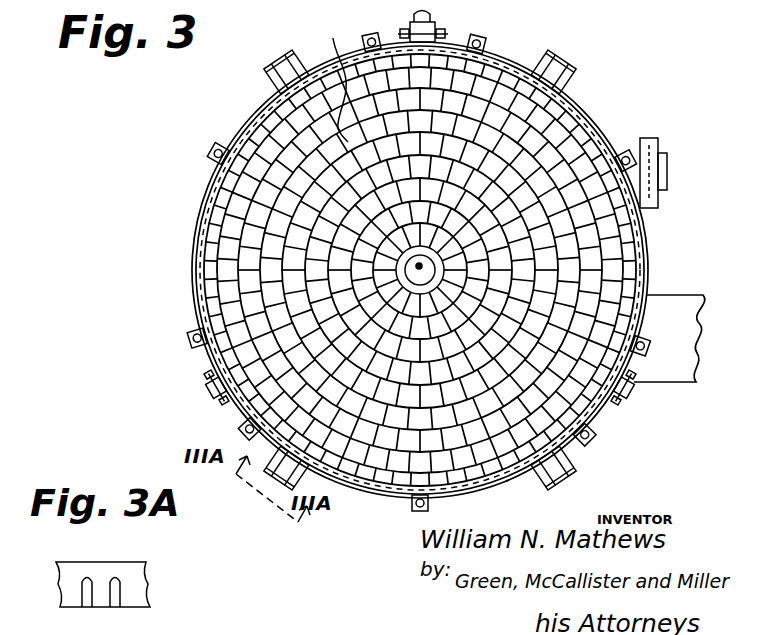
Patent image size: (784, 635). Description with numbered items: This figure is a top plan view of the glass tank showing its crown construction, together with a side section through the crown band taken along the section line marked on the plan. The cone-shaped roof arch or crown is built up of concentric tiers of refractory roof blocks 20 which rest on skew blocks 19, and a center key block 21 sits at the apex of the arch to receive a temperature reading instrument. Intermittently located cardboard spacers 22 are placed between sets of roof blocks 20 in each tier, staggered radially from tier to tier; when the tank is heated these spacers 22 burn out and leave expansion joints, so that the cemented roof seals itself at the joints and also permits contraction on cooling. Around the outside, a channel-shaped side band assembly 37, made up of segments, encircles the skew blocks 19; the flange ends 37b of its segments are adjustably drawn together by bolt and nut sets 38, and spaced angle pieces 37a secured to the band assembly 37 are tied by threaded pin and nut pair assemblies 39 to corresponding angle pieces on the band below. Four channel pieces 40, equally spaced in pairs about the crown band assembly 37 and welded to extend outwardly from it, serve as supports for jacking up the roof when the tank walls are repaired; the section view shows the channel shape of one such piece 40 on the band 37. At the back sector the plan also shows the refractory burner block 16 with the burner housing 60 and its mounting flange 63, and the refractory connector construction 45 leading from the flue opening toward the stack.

In FIG. 3, the refractory burner block 16 is at (614, 142).
In FIG. 3, the skew blocks 19 is at (490, 64).
In FIG. 3, the roof blocks 20 is at (262, 126).
In FIG. 3, the center key block 21 is at (420, 270).
In FIG. 3, the cardboard spacers 22 is at (326, 78).
In FIG. 3, the channel-shaped side band assembly 37 is at (214, 204).
In FIG. 3A, the channel-shaped side band assembly 37 is at (146, 567).
In FIG. 3, the angle pieces 37a is at (404, 500).
In FIG. 3, the flange ends 37b is at (424, 20).
In FIG. 3, the bolt and nut sets 38 is at (446, 34).
In FIG. 3, the threaded pin and nut pair assemblies 39 is at (206, 150).
In FIG. 3, the channel pieces 40 is at (288, 70).
In FIG. 3A, the channel pieces 40 is at (112, 596).
In FIG. 3, the refractory connector construction 45 is at (678, 300).
In FIG. 3, the burner housing 60 is at (679, 154).
In FIG. 3, the mounting flange 63 is at (652, 138).